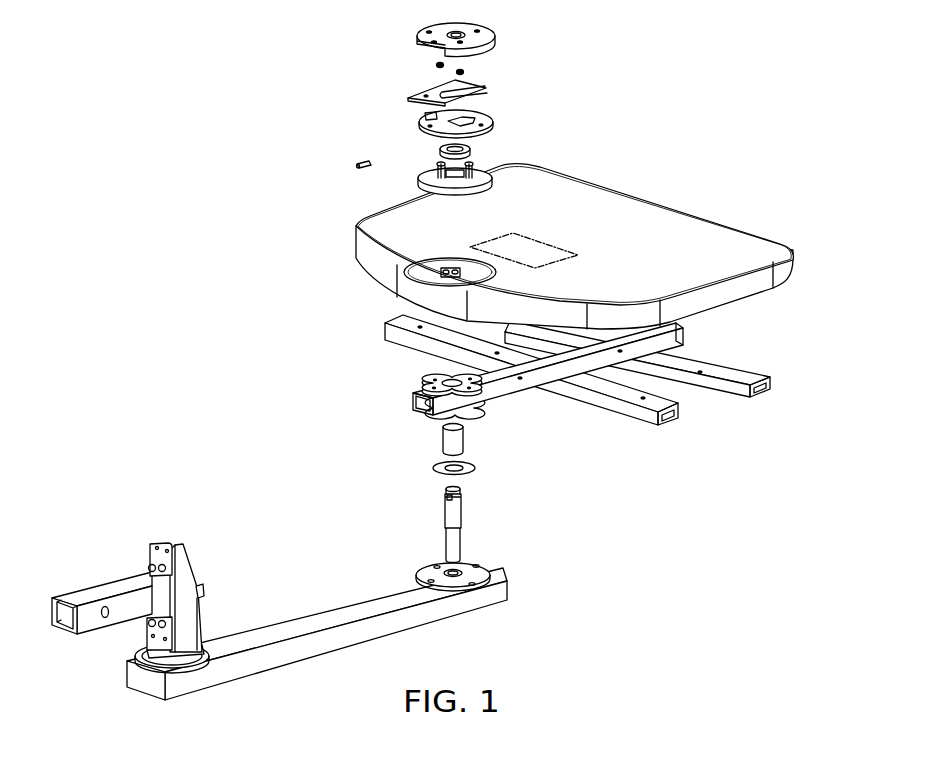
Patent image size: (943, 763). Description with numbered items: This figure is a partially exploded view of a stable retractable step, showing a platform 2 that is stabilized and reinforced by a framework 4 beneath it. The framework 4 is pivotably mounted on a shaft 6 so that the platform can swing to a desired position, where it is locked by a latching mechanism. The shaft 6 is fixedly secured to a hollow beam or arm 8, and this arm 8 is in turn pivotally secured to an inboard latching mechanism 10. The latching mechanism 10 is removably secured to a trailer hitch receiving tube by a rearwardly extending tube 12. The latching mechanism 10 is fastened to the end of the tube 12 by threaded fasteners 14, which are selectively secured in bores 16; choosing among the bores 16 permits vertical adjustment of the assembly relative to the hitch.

The platform 2 is at (650, 186).
The framework 4 is at (571, 413).
The shaft 6 is at (459, 512).
The hollow beam or arm 8 is at (390, 623).
The inboard latching mechanism 10 is at (198, 559).
The rearwardly extending tube 12 is at (90, 590).
The threaded fasteners 14 is at (160, 570).
The bores 16 is at (167, 642).